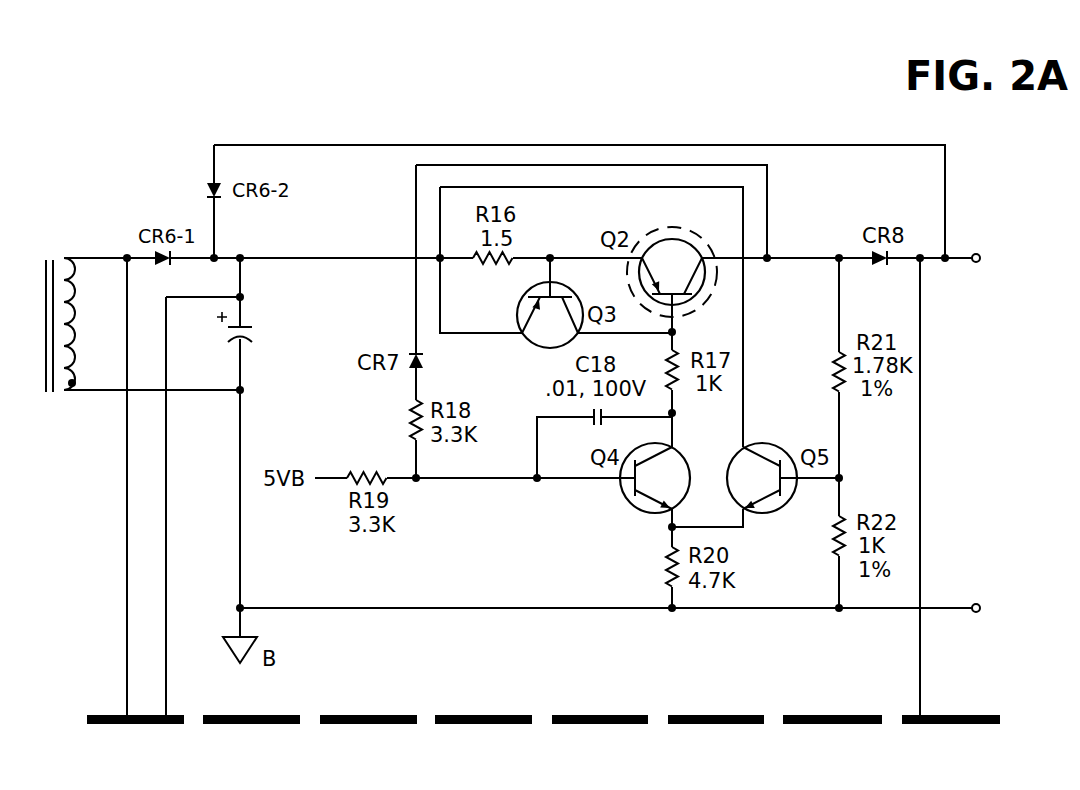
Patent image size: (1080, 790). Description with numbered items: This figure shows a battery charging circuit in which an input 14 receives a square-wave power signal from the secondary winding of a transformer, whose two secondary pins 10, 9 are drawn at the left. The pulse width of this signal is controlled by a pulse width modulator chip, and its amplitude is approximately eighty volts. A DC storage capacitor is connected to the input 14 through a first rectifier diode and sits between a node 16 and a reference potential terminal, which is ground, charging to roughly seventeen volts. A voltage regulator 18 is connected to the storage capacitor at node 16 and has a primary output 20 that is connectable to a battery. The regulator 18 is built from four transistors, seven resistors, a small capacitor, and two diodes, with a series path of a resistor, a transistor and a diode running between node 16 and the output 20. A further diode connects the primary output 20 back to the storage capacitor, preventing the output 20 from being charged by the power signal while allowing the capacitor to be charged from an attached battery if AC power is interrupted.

The voltage regulator 18 is at (218, 92).
The input 14 is at (127, 256).
The node 16 is at (242, 256).
The primary output 20 is at (981, 256).
The pin 10 is at (109, 276).
The pin 9 is at (152, 381).